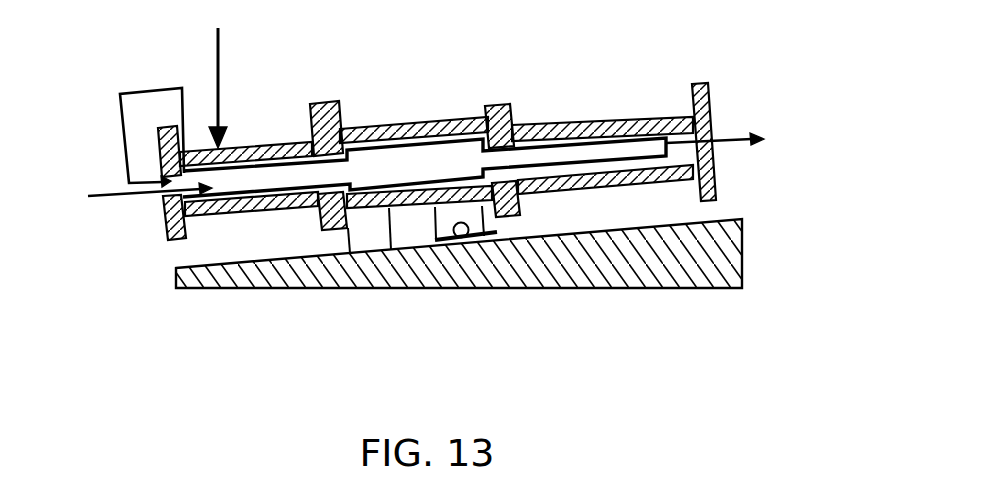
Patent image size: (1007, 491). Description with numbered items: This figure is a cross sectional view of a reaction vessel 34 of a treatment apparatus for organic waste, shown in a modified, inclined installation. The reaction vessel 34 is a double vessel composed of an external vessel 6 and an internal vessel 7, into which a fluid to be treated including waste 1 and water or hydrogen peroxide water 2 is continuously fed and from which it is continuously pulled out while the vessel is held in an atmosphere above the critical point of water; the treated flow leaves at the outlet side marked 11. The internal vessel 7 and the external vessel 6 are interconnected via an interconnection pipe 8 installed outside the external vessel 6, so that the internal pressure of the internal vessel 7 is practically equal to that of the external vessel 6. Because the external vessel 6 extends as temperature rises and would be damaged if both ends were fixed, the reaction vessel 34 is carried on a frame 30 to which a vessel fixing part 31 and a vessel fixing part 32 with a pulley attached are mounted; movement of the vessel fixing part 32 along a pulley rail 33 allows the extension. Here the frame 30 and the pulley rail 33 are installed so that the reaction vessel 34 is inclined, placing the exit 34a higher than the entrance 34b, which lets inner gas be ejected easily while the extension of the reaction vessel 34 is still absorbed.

The waste 1 is at (138, 198).
The water or hydrogen peroxide water 2 is at (218, 75).
The external vessel 6 is at (563, 124).
The internal vessel 7 is at (418, 164).
The interconnection pipe 8 is at (145, 90).
The outflow 11 is at (733, 140).
The frame 30 is at (673, 276).
The vessel fixing part 31 is at (357, 245).
The vessel fixing part with a pulley attached 32 is at (475, 248).
The pulley rail 33 is at (440, 245).
The reaction vessel 34 is at (443, 120).
The exit 34a is at (712, 140).
The entrance 34b is at (163, 206).